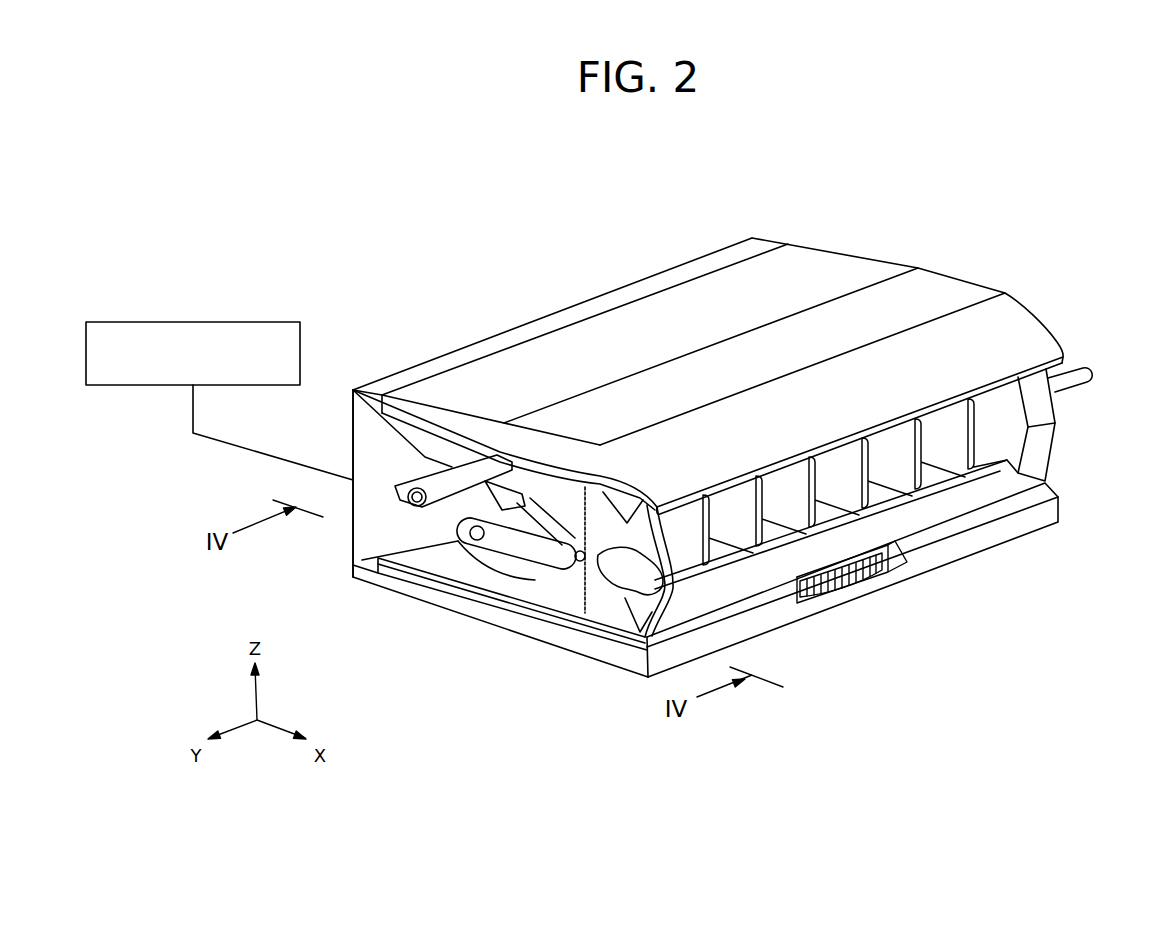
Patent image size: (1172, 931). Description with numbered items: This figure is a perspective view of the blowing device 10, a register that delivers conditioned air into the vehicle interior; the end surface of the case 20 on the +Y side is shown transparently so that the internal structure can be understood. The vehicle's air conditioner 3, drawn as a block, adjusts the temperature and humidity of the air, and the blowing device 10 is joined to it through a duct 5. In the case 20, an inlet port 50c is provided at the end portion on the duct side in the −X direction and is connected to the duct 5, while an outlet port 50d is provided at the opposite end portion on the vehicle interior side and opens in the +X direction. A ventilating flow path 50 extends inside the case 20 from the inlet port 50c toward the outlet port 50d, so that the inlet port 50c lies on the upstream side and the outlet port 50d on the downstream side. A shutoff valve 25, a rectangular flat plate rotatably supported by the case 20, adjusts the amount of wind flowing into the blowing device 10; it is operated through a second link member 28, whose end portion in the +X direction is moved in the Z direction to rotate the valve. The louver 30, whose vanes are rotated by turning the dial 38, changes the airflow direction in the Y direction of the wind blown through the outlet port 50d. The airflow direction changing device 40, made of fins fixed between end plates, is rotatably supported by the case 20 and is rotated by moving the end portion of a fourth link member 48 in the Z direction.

The air conditioner 3 is at (230, 322).
The duct 5 is at (240, 447).
The blowing device 10 is at (915, 196).
The case 20 is at (430, 428).
The shutoff valve 25 is at (405, 476).
The second link member 28 is at (1094, 375).
The louver 30 is at (914, 508).
The dial 38 is at (878, 582).
The airflow direction changing device 40 is at (500, 503).
The fourth link member 48 is at (617, 572).
The ventilating flow path 50 is at (534, 577).
The inlet port 50c is at (335, 441).
The outlet port 50d is at (1004, 442).